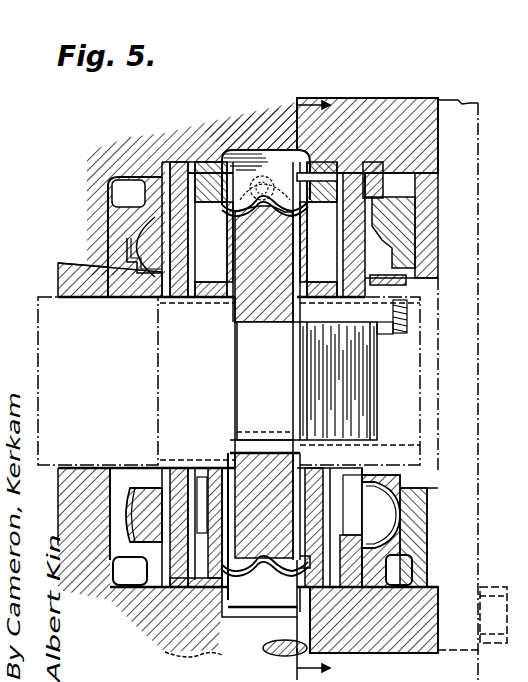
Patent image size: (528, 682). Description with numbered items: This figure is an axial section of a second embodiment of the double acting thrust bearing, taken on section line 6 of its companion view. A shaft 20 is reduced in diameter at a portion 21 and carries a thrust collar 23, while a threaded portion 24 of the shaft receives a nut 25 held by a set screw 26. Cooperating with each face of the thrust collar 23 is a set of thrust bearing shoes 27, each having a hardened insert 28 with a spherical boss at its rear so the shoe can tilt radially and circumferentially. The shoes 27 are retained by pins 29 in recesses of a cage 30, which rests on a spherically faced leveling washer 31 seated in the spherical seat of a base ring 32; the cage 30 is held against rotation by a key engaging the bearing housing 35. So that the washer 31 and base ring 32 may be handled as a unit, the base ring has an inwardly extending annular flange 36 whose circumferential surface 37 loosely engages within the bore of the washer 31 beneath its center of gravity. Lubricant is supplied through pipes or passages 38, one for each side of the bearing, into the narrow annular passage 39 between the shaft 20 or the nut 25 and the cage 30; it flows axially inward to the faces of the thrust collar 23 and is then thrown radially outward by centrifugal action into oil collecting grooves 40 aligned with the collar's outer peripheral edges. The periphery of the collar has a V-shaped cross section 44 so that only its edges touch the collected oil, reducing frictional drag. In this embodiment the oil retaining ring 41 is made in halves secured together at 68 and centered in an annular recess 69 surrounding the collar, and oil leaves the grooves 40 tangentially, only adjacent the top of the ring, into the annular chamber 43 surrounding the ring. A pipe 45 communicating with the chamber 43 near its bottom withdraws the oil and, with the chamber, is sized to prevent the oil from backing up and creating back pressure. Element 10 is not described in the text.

The section line 6— 6 is at (320, 388).
The shaft 10 is at (264, 264).
The shaft 20 is at (93, 432).
The reduced diameter portion 21 is at (254, 408).
The thrust collar 23 is at (235, 322).
The threaded portion 24 is at (358, 400).
The nut 25 is at (350, 314).
The set screw 26 is at (398, 334).
The thrust bearing shoes 27 is at (204, 275).
The hardened insert 28 is at (186, 467).
The pins 29 is at (186, 602).
The cage 30 is at (386, 160).
The leveling washer 31 is at (392, 249).
The base ring 32 is at (415, 222).
The bearing housing 35 is at (400, 108).
The annular flange 36 is at (165, 296).
The circumferential surface 37 is at (160, 300).
The pipes or passages 38 is at (432, 527).
The annular passage 39 is at (338, 467).
The oil collecting grooves 40 is at (288, 572).
The oil retaining ring 41 is at (287, 228).
The annular chamber 43 is at (246, 142).
The V-shaped cross section 44 is at (264, 505).
The pipe 45 is at (266, 633).
The securing location of ring halves 68 is at (256, 182).
The annular recess 69 is at (193, 644).